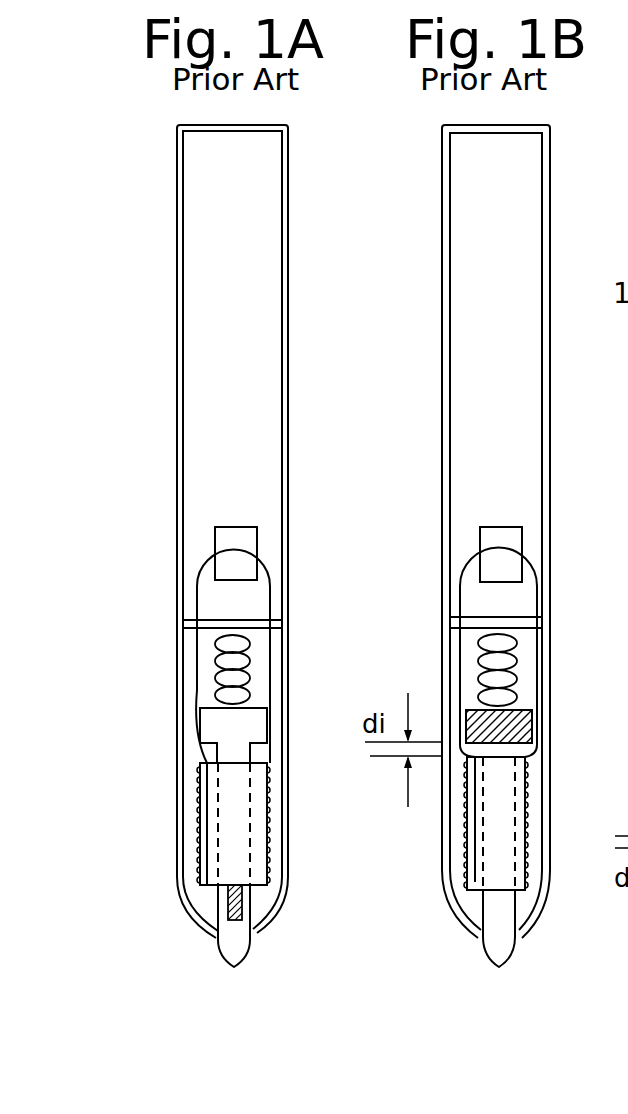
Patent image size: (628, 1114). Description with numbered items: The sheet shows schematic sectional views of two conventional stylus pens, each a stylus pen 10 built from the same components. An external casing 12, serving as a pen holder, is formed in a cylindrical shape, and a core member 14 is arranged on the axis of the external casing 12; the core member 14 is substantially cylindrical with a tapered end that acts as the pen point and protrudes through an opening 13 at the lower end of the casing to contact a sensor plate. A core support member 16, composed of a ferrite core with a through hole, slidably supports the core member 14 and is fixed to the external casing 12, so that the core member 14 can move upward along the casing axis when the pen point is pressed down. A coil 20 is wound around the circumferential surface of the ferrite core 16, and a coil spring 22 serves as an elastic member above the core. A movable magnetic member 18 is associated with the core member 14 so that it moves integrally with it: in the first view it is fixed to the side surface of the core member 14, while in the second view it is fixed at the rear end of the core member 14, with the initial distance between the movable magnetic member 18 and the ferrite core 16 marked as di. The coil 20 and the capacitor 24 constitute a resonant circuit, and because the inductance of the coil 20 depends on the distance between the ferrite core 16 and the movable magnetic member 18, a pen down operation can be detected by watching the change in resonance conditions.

In FIG. 1A, the position indicator (stylus pen) 10 is at (134, 209).
In FIG. 1A, the external casing 12 is at (177, 330).
In FIG. 1B, the external casing 12 is at (442, 320).
In FIG. 1A, the opening 13 is at (256, 920).
In FIG. 1A, the core member 14 is at (230, 905).
In FIG. 1B, the core member 14 is at (490, 917).
In FIG. 1A, the core support member 16 is at (255, 810).
In FIG. 1B, the core support member 16 is at (512, 820).
In FIG. 1A, the movable magnetic member 18 is at (243, 890).
In FIG. 1B, the movable magnetic member 18 is at (532, 718).
In FIG. 1A, the coil 20 is at (272, 778).
In FIG. 1B, the coil 20 is at (530, 772).
In FIG. 1A, the coil spring 22 is at (250, 656).
In FIG. 1B, the coil spring 22 is at (517, 650).
In FIG. 1A, the capacitor 24 is at (257, 538).
In FIG. 1B, the capacitor 24 is at (522, 538).